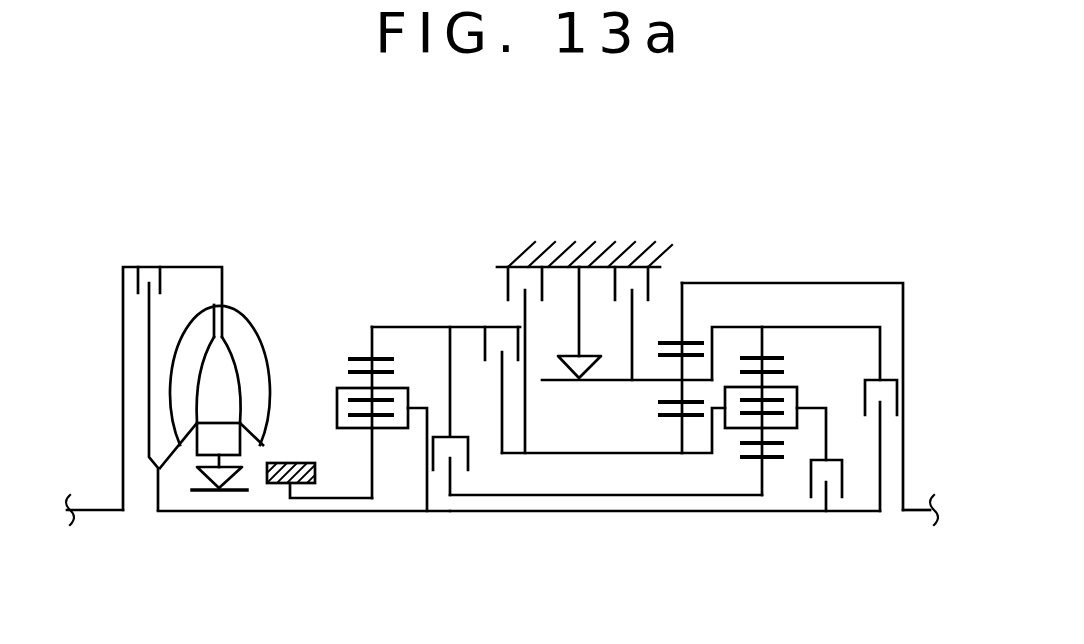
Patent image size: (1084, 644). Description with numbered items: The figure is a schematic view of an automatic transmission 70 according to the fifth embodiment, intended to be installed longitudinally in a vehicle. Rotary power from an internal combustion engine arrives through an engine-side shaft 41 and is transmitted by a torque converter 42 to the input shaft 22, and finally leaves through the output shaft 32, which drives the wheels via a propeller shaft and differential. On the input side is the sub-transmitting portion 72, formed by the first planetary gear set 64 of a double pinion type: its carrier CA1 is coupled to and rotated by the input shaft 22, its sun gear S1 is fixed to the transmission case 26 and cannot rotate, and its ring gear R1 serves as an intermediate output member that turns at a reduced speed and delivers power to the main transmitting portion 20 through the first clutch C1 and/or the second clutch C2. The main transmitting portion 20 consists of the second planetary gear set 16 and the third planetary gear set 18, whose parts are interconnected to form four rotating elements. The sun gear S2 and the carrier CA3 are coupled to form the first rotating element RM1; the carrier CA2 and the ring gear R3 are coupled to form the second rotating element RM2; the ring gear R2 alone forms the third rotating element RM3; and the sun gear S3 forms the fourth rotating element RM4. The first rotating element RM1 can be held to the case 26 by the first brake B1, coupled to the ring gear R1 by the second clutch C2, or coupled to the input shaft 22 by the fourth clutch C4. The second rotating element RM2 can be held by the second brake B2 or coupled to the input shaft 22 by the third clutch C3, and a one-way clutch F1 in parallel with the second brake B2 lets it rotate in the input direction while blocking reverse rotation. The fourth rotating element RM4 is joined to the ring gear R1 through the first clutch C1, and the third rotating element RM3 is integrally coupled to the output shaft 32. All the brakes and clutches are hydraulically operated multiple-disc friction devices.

The torque converter 42 is at (198, 247).
The engine output shaft 41 is at (87, 512).
The input shaft 22 is at (225, 512).
The transmission case 26 is at (290, 462).
The first planetary gear set 64 is at (349, 362).
The ring gear R1 is at (358, 357).
The carrier CA1 is at (335, 400).
The sun gear S1 is at (394, 469).
The main transmitting portion 20 is at (567, 360).
The first clutch C1 is at (464, 411).
The second clutch C2 is at (446, 373).
The first brake B1 is at (516, 328).
The second brake B2 is at (637, 292).
The one-way clutch F1 is at (569, 322).
The carrier CA2 is at (660, 381).
The first rotating element RM1 is at (640, 455).
The fourth rotating element RM4 is at (572, 495).
The automatic transmission 70 is at (759, 350).
The third planetary gear set 18 is at (759, 385).
The third rotating element RM3 is at (808, 283).
The ring gear R2 is at (690, 341).
The sun gear S2 is at (677, 420).
The second rotating element RM2 is at (795, 327).
The ring gear R3 is at (748, 356).
The carrier CA3 is at (818, 373).
The sun gear S3 is at (750, 460).
The third clutch C3 is at (863, 445).
The fourth clutch C4 is at (803, 486).
The sub-transmitting portion 72 is at (358, 518).
The second planetary gear set 16 is at (676, 468).
The output shaft 32 is at (927, 512).